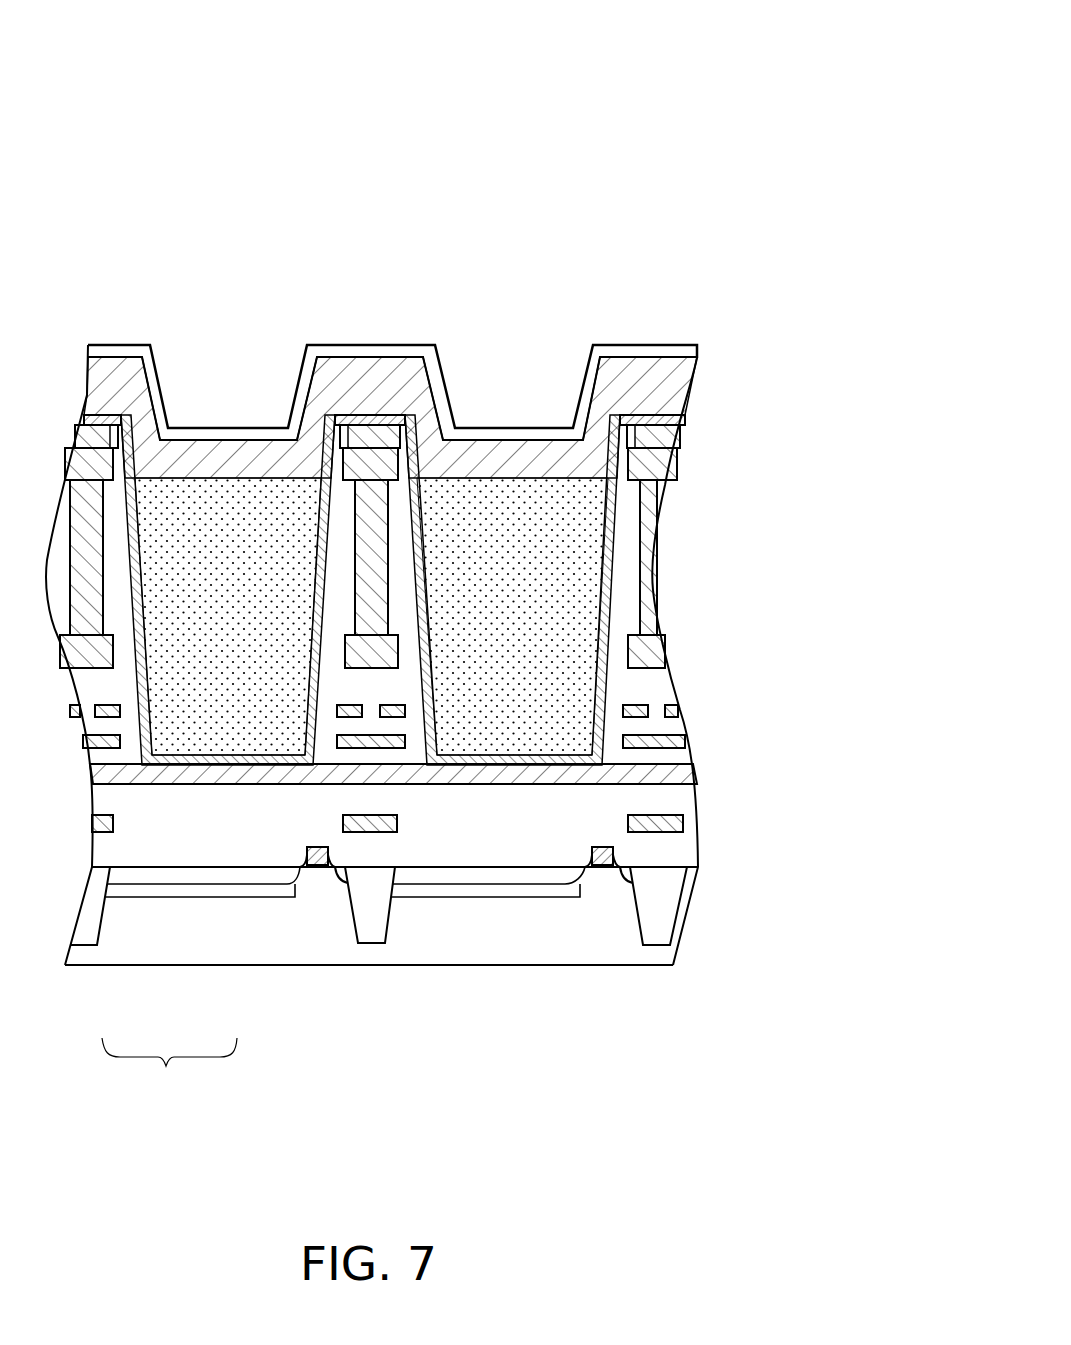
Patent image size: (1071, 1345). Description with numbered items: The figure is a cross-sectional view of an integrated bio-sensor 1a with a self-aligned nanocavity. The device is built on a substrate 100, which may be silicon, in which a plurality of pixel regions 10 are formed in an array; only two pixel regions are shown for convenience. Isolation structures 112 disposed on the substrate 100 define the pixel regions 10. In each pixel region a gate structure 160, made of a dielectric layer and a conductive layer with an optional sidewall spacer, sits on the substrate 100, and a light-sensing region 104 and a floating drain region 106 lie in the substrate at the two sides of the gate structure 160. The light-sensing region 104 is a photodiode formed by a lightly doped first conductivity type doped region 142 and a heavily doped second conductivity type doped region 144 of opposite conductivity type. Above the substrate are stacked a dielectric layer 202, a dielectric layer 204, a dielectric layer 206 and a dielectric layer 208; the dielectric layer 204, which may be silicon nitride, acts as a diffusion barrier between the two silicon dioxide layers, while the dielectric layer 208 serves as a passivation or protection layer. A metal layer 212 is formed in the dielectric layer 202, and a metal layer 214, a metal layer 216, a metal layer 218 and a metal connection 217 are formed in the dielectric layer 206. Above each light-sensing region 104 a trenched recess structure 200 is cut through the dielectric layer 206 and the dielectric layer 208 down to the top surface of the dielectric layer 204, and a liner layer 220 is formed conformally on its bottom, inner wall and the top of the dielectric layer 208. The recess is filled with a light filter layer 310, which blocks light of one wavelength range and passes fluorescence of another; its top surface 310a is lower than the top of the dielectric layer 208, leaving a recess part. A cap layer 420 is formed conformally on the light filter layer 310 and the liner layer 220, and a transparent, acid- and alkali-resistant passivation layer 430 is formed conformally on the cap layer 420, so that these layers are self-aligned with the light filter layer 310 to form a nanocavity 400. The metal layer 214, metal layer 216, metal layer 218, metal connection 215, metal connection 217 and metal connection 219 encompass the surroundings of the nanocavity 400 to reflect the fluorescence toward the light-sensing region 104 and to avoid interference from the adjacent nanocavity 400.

The integrated bio-sensor 1a is at (700, 82).
The pixel region 10 is at (260, 920).
The substrate 100 is at (470, 938).
The light-sensing region 104 is at (169, 1069).
The floating drain region 106 is at (343, 873).
The isolation structure 112 is at (85, 925).
The first conductivity type doped region 142 is at (192, 890).
The second conductivity type doped region 144 is at (142, 877).
The gate structure 160 is at (300, 843).
The trenched recess structure 200 is at (625, 512).
The dielectric layer 202 is at (682, 850).
The dielectric layer 204 is at (693, 774).
The dielectric layer 206 is at (655, 680).
The dielectric layer 208 is at (397, 432).
The metal layer 212 is at (683, 822).
The metal layer 214 is at (690, 742).
The metal connection 215 is at (672, 711).
The metal layer 216 is at (655, 648).
The metal connection 217 is at (645, 560).
The metal layer 218 is at (662, 467).
The metal connection 219 is at (662, 435).
The liner layer 220 is at (660, 419).
The light filter layer 310 is at (250, 618).
The top surface 310a is at (466, 478).
The nanocavity 400 is at (267, 360).
The cap layer 420 is at (662, 388).
The passivation layer 430 is at (662, 352).